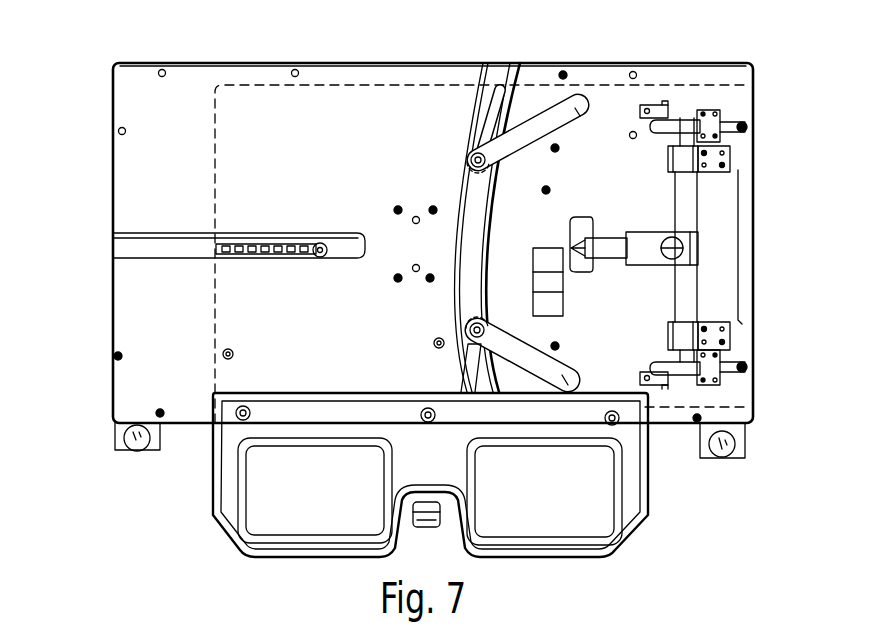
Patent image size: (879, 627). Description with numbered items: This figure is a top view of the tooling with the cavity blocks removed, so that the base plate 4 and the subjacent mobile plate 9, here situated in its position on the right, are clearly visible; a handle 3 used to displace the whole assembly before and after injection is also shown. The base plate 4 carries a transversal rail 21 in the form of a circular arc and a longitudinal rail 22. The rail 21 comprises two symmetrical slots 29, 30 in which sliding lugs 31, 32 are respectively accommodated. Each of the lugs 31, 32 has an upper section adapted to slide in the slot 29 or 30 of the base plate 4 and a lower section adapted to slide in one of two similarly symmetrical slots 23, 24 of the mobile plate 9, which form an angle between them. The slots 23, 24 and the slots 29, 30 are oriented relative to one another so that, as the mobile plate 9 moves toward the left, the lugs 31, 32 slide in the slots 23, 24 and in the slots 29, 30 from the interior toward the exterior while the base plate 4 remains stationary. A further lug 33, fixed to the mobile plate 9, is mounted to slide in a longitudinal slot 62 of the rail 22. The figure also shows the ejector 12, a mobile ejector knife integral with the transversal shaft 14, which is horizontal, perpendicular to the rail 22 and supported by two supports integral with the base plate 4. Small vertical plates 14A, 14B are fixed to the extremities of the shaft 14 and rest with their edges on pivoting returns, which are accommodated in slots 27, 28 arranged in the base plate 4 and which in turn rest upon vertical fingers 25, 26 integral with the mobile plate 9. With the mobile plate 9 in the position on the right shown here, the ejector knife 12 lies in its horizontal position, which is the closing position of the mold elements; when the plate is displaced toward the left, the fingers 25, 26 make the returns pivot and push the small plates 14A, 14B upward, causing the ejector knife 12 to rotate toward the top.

The handle 3 is at (642, 505).
The base plate 4 is at (178, 88).
The mobile plate 9 is at (235, 157).
The ejector 12 is at (650, 255).
The transversal shaft 14 is at (688, 215).
The small vertical plate 14A is at (678, 385).
The small vertical plate 14B is at (678, 110).
The transversal rail 21 is at (503, 82).
The longitudinal rail 22 is at (133, 247).
The slot 23 is at (572, 380).
The slot 24 is at (578, 105).
The finger 25 is at (745, 362).
The finger 26 is at (742, 130).
The slot 27 is at (727, 373).
The slot 28 is at (735, 118).
The slot 29 is at (483, 118).
The slot 30 is at (494, 392).
The sliding lug 31 is at (470, 160).
The sliding lug 32 is at (468, 383).
The lug 33 is at (315, 258).
The longitudinal slot 62 is at (240, 247).